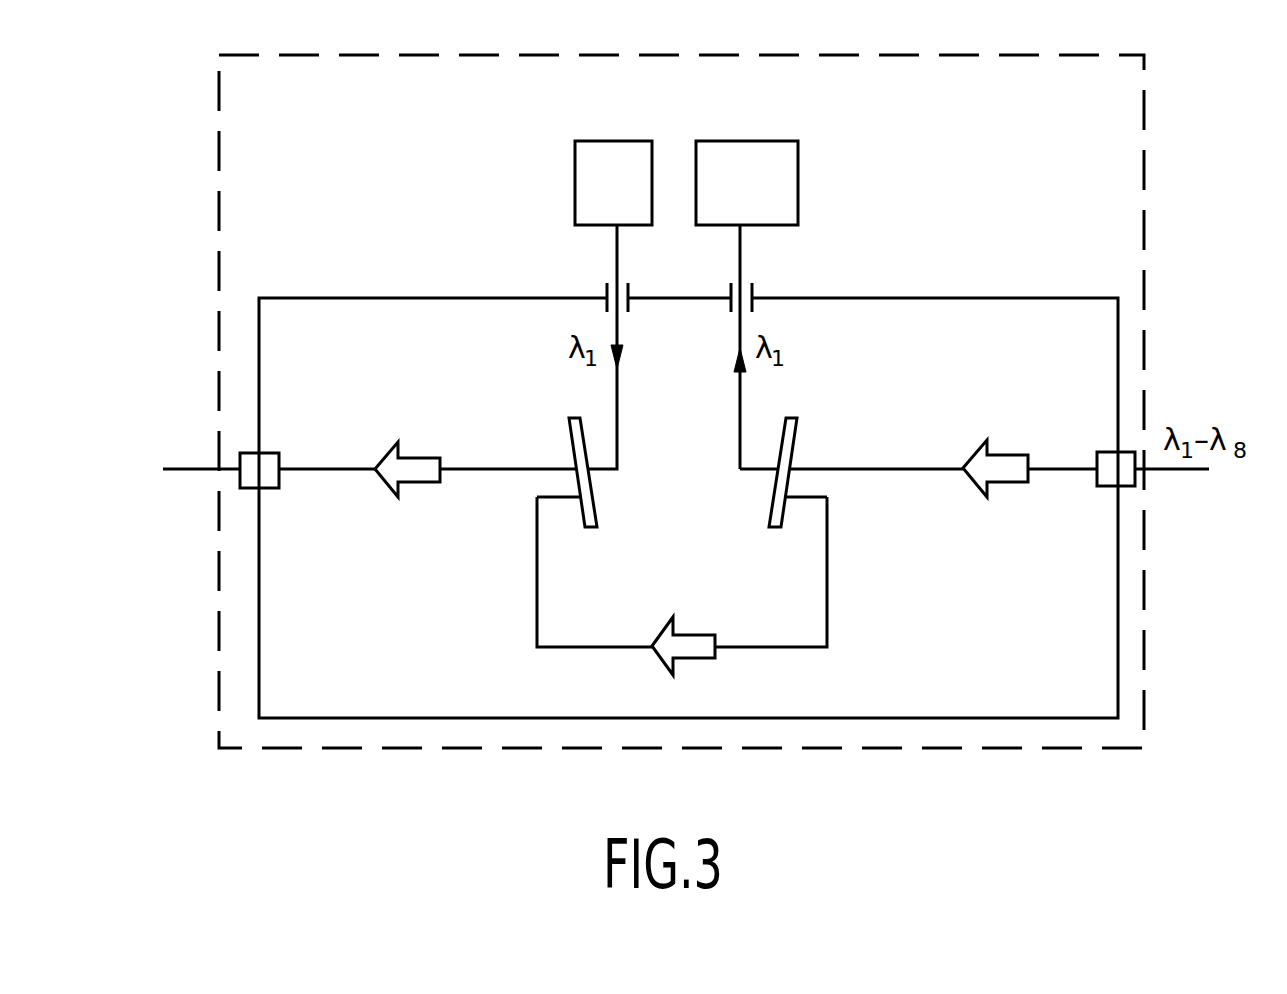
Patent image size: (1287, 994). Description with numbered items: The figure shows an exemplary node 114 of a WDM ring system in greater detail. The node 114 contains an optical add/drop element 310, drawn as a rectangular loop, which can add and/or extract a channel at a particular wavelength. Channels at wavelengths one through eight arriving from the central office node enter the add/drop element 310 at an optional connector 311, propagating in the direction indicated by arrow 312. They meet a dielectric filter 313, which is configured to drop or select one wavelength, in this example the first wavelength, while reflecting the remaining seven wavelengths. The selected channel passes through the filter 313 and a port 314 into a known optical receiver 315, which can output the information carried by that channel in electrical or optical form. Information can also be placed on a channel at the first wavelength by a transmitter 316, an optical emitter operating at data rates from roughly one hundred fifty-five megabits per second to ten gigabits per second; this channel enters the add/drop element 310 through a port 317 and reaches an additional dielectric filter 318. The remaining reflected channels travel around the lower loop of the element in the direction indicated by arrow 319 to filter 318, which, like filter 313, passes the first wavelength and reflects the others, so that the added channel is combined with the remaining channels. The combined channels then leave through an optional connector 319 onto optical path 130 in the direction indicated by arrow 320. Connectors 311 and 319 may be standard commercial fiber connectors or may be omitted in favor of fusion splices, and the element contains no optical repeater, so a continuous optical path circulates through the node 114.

The node 114 is at (1015, 748).
The optical add/drop element 310 is at (1118, 320).
The optional connector 311 is at (1133, 487).
The arrow 312 is at (1002, 483).
The dielectric filter 313 is at (797, 422).
The port 314 is at (755, 290).
The optical receiver 315 is at (798, 158).
The transmitter 316 is at (627, 141).
The port 317 is at (605, 290).
The dielectric filter 318 is at (572, 440).
The optional connector 319 is at (277, 450).
The arrow 320 is at (417, 483).
The optical path 130 is at (205, 470).